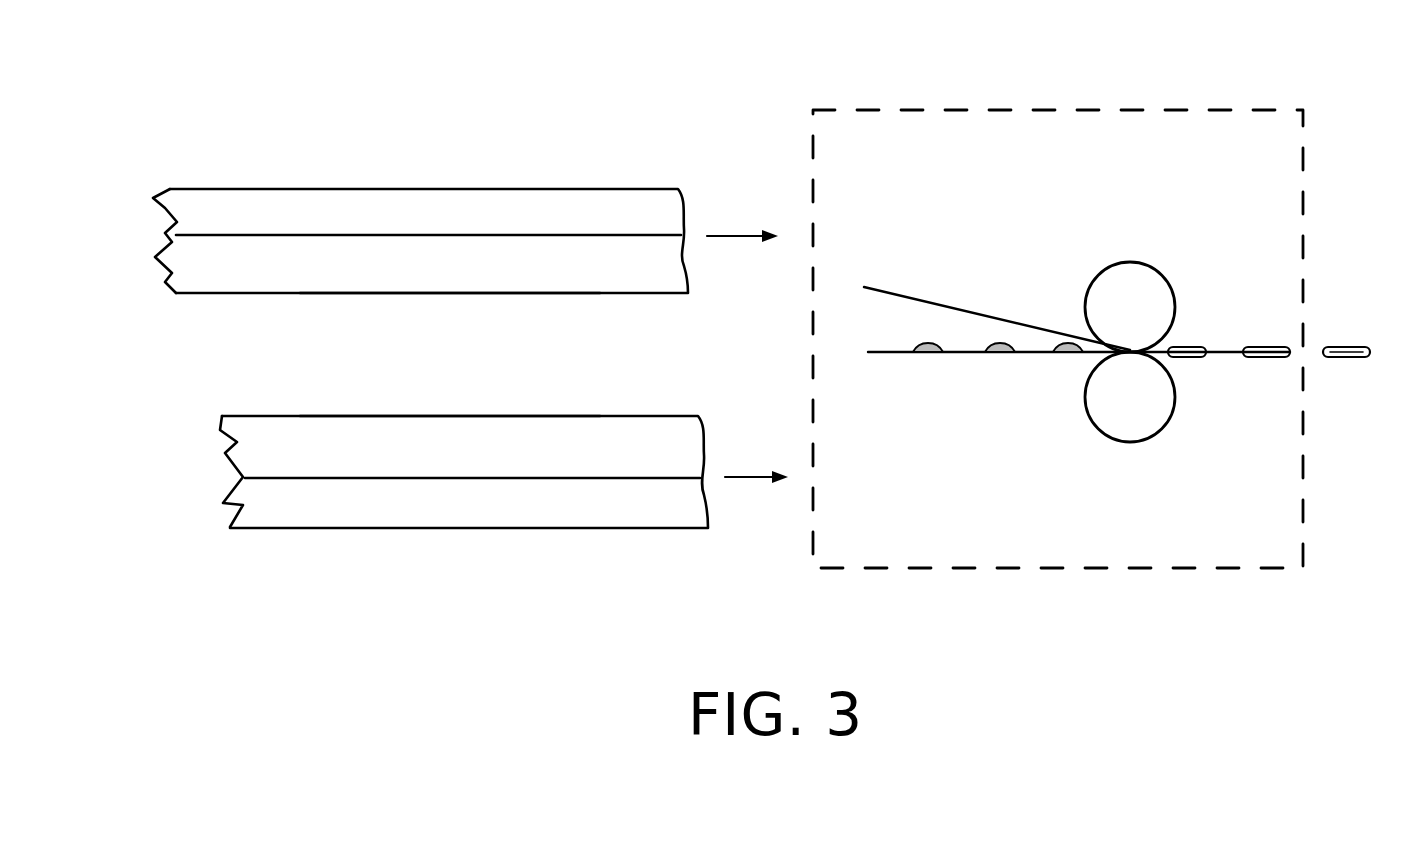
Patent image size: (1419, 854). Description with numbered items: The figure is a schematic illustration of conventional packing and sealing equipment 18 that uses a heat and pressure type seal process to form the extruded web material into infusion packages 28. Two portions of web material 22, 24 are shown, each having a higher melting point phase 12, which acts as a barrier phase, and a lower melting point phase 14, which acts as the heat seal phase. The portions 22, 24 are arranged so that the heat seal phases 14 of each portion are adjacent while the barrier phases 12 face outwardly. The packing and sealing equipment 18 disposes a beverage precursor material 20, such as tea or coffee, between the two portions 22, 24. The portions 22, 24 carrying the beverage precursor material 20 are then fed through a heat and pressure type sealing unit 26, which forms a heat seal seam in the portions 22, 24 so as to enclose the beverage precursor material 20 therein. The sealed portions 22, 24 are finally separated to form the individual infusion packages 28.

The higher melting point phase 12 is at (645, 223).
The lower melting point phase 14 is at (645, 272).
The packing and sealing equipment 18 is at (1233, 110).
The beverage precursor material 20 is at (935, 338).
The web material portion 22 is at (627, 172).
The web material portion 24 is at (678, 550).
The heat and pressure type sealing unit 26 is at (1130, 242).
The infusion packages 28 is at (1343, 347).